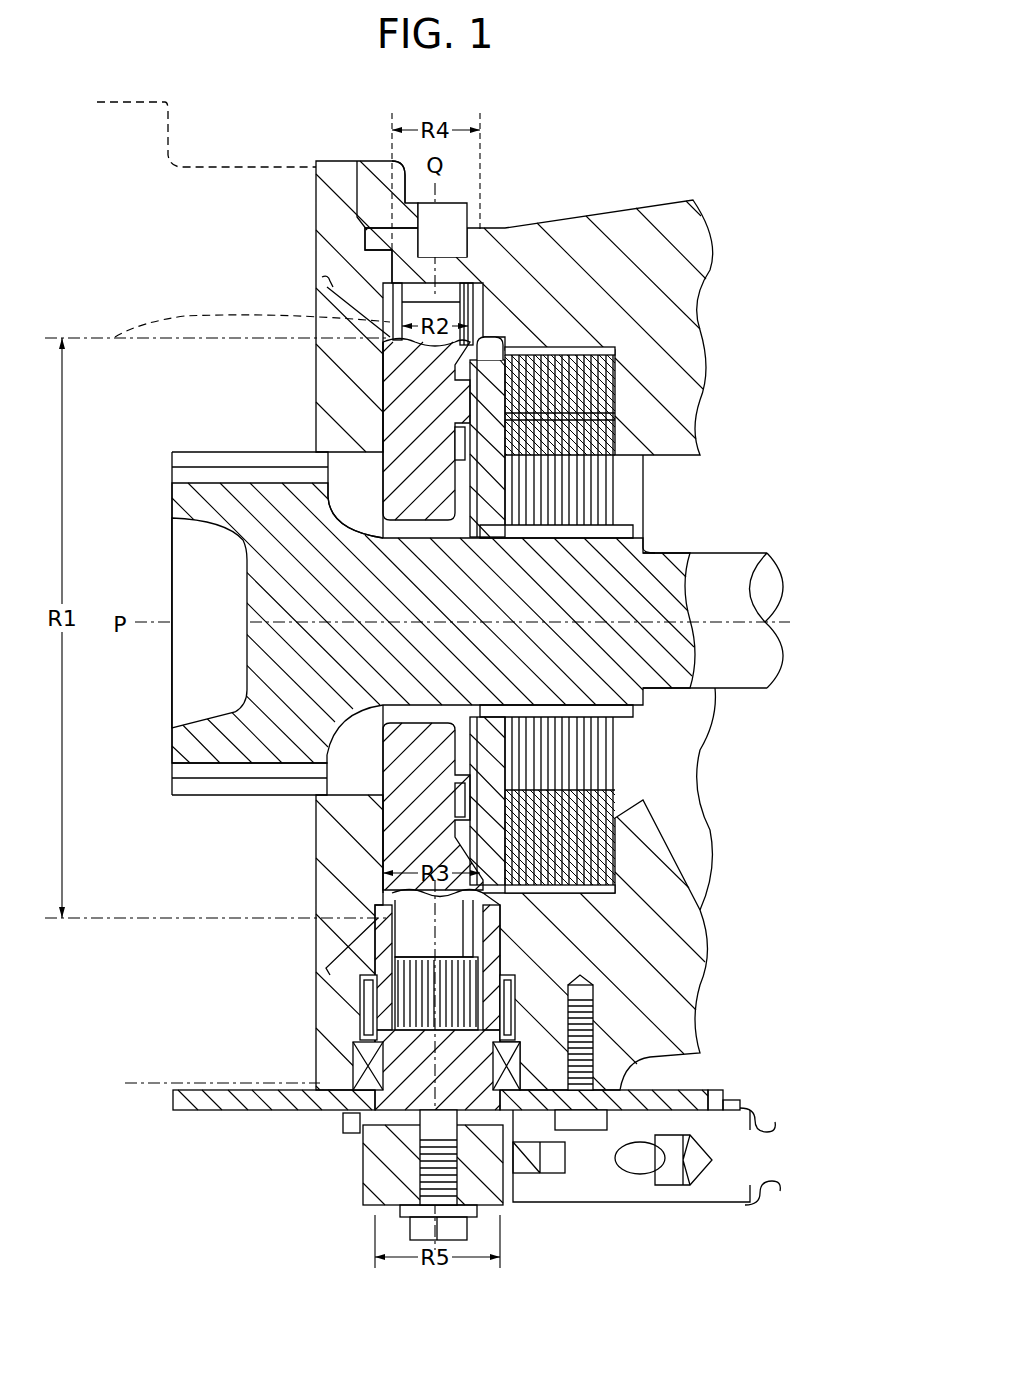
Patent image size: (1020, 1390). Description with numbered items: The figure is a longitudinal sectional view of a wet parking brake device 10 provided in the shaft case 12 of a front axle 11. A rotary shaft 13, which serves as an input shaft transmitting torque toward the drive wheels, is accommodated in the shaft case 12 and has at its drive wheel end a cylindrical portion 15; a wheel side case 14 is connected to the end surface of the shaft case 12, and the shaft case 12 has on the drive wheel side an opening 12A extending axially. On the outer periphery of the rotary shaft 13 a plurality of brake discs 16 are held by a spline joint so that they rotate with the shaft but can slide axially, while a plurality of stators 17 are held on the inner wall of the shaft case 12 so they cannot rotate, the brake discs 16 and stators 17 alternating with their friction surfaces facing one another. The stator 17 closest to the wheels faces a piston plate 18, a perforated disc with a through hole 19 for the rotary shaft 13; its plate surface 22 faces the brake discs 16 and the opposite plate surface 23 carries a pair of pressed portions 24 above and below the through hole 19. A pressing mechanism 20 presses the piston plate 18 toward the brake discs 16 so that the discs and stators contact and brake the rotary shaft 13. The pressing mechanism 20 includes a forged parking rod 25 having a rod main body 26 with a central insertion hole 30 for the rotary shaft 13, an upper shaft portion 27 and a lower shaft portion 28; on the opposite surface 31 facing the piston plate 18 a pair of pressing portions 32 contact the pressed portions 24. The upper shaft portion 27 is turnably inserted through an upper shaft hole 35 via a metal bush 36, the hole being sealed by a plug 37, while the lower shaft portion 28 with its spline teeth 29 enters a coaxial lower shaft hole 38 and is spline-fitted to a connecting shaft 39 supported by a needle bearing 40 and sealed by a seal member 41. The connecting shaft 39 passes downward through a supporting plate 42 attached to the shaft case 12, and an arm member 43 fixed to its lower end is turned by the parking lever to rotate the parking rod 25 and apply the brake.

The wet parking brake device 10 is at (724, 430).
The front axle 11 is at (636, 214).
The shaft case 12 is at (586, 228).
The opening 12A is at (314, 893).
The rotary shaft 13 is at (740, 550).
The wheel side case 14 is at (218, 160).
The cylindrical portion 15 is at (172, 505).
The brake discs 16 is at (600, 726).
The stators 17 is at (590, 895).
The piston plate 18 is at (410, 840).
The through hole 19 is at (455, 755).
The pressing mechanism 20 is at (362, 402).
The plate surface 22 is at (600, 380).
The plate surface 23 is at (420, 393).
The pressed portions 24 is at (520, 522).
The parking rod 25 is at (382, 449).
The rod main body 26 is at (385, 805).
The upper shaft portion 27 is at (395, 300).
The lower shaft portion 28 is at (425, 932).
The spline teeth 29 is at (440, 1000).
The insertion hole 30 is at (385, 707).
The opposite surface 31 is at (330, 500).
The pressing portions 32 is at (455, 440).
The upper shaft hole 35 is at (492, 335).
The metal bush 36 is at (392, 327).
The plug 37 is at (494, 228).
The lower shaft hole 38 is at (362, 972).
The connecting shaft 39 is at (527, 1057).
The needle bearing 40 is at (355, 1060).
The seal member 41 is at (355, 1072).
The supporting plate 42 is at (673, 1090).
The arm member 43 is at (523, 1180).